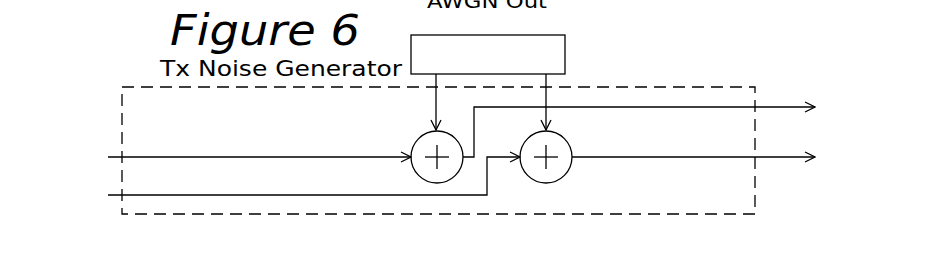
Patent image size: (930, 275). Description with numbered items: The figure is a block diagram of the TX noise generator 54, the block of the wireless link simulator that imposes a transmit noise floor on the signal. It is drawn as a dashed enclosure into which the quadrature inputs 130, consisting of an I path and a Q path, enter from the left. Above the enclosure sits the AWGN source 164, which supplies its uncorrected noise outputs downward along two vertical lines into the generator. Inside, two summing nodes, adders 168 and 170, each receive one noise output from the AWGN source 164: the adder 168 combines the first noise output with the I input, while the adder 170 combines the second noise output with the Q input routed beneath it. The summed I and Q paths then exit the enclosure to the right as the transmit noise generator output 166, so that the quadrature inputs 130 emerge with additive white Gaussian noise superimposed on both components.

The TX noise generator 54 is at (421, 139).
The quadrature inputs 130 is at (276, 169).
The AWGN source 164 is at (512, 82).
The adder 168 is at (416, 147).
The adder 170 is at (563, 151).
The transmit noise generator output 166 is at (676, 135).